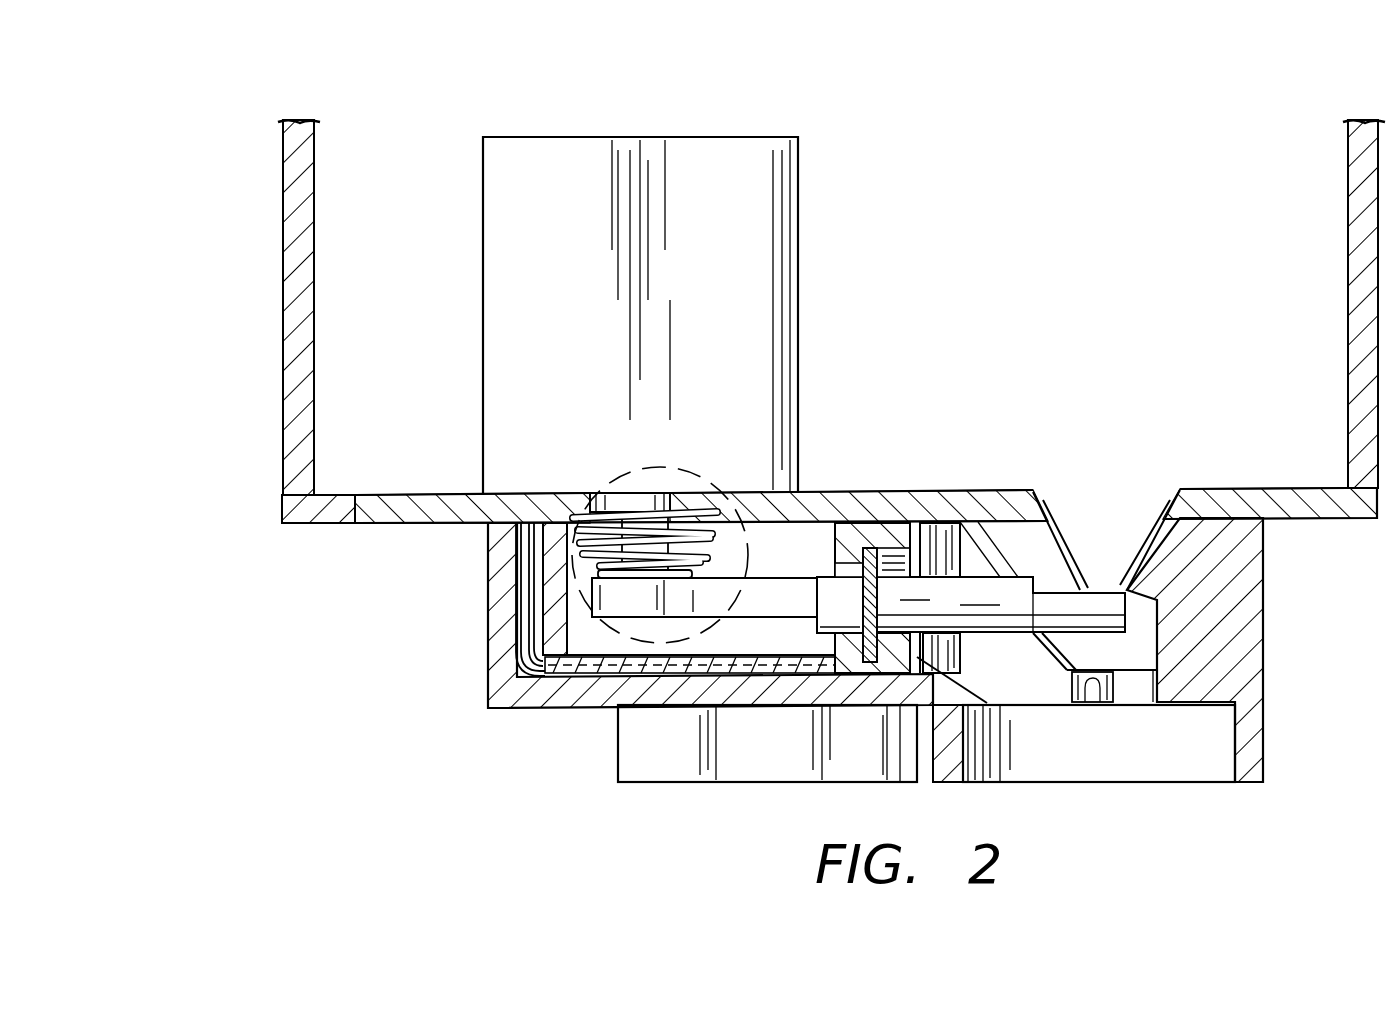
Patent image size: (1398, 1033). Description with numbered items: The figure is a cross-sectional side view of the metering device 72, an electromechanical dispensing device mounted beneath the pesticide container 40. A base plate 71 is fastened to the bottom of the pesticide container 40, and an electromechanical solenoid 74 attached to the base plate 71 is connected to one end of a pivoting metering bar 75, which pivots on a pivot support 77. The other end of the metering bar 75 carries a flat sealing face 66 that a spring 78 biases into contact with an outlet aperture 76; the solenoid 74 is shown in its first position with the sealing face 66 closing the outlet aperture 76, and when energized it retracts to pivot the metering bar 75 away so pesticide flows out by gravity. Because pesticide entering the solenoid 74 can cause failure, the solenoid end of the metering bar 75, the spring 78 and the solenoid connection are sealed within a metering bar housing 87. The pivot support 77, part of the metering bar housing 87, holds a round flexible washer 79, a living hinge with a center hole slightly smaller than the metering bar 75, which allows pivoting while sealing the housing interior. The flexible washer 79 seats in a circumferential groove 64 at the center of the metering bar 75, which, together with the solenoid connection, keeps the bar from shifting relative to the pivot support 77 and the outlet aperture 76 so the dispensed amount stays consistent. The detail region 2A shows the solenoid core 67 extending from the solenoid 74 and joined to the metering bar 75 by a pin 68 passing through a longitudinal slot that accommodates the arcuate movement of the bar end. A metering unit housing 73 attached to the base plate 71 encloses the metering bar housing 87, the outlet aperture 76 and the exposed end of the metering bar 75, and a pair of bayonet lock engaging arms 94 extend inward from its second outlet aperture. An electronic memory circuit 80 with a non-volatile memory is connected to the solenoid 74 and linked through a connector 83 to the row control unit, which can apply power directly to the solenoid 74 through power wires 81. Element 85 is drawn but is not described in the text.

The metering device 72 is at (1020, 100).
The electromechanical solenoid 74 is at (762, 240).
The pesticide container 40 is at (315, 510).
The base plate 71 is at (457, 495).
The solenoid core 67 is at (643, 495).
The detail view 2A is at (730, 495).
The flexible washer 79 is at (865, 548).
The pivot support 77 is at (885, 530).
The metering bar 75 is at (945, 592).
The outlet aperture 76 is at (1108, 528).
The spring 78 is at (703, 557).
The sealing face 66 is at (1130, 592).
The pin 68 is at (600, 562).
The power wires 81 is at (528, 638).
The seal housing 85 is at (920, 660).
The metering unit housing 73 is at (1240, 667).
The metering bar housing 87 is at (522, 685).
The groove 64 is at (857, 670).
The electronic memory circuit 80 is at (593, 680).
The connector 83 is at (633, 767).
The bayonet lock engaging arms 94 is at (1100, 700).